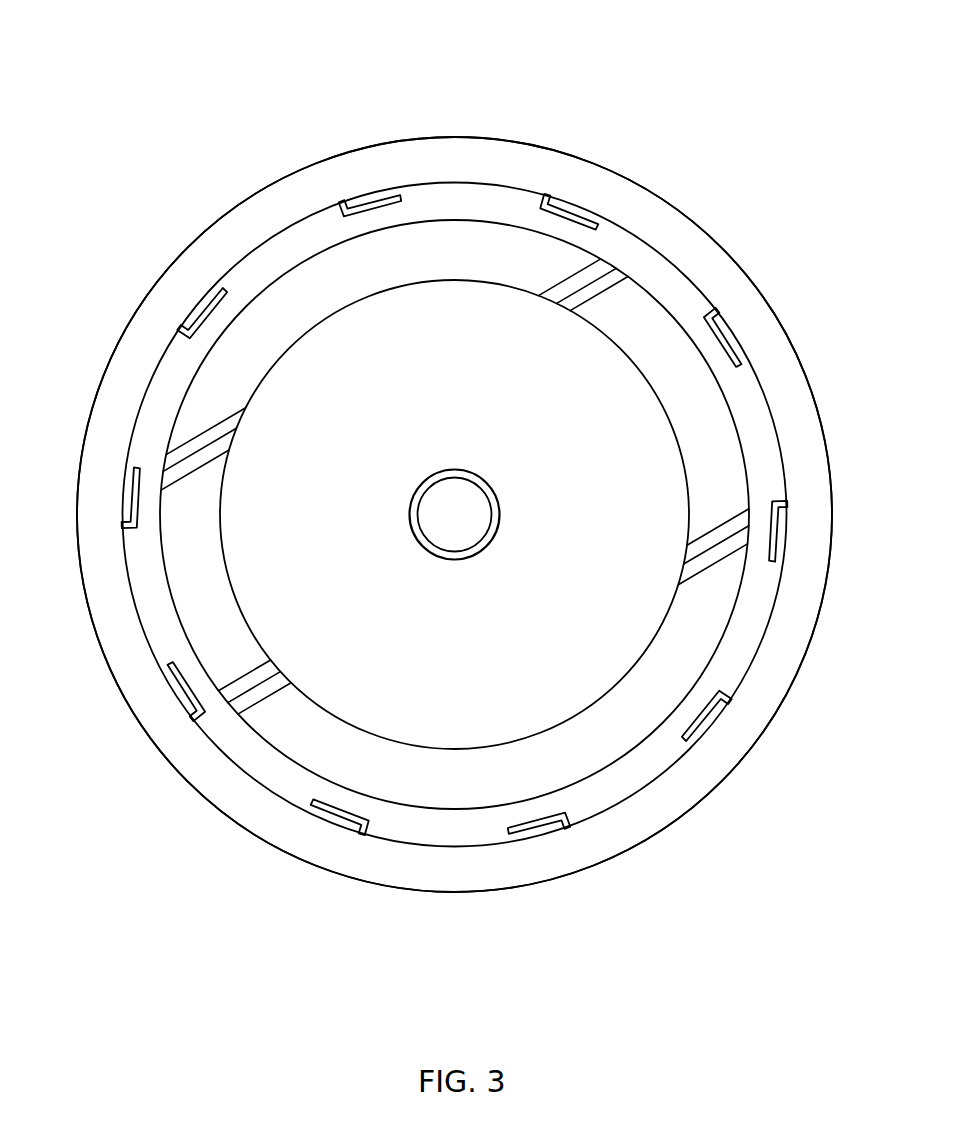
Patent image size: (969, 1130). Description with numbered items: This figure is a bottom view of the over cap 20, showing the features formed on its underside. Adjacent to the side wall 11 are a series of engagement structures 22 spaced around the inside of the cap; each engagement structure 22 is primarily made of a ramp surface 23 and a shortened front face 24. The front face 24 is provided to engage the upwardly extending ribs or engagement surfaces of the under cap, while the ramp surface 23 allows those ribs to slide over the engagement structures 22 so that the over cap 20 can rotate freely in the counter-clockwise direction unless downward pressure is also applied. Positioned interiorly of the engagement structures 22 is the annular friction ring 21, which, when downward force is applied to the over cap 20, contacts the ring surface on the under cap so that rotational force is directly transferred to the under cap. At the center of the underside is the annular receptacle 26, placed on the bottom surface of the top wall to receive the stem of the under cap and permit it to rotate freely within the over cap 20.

The over cap 20 is at (712, 96).
The side wall 11 is at (765, 686).
The annular friction ring 21 is at (235, 640).
The engagement structures 22 is at (128, 533).
The ramp surface 23 is at (195, 318).
The front face 24 is at (612, 240).
The annular receptacle 26 is at (487, 491).